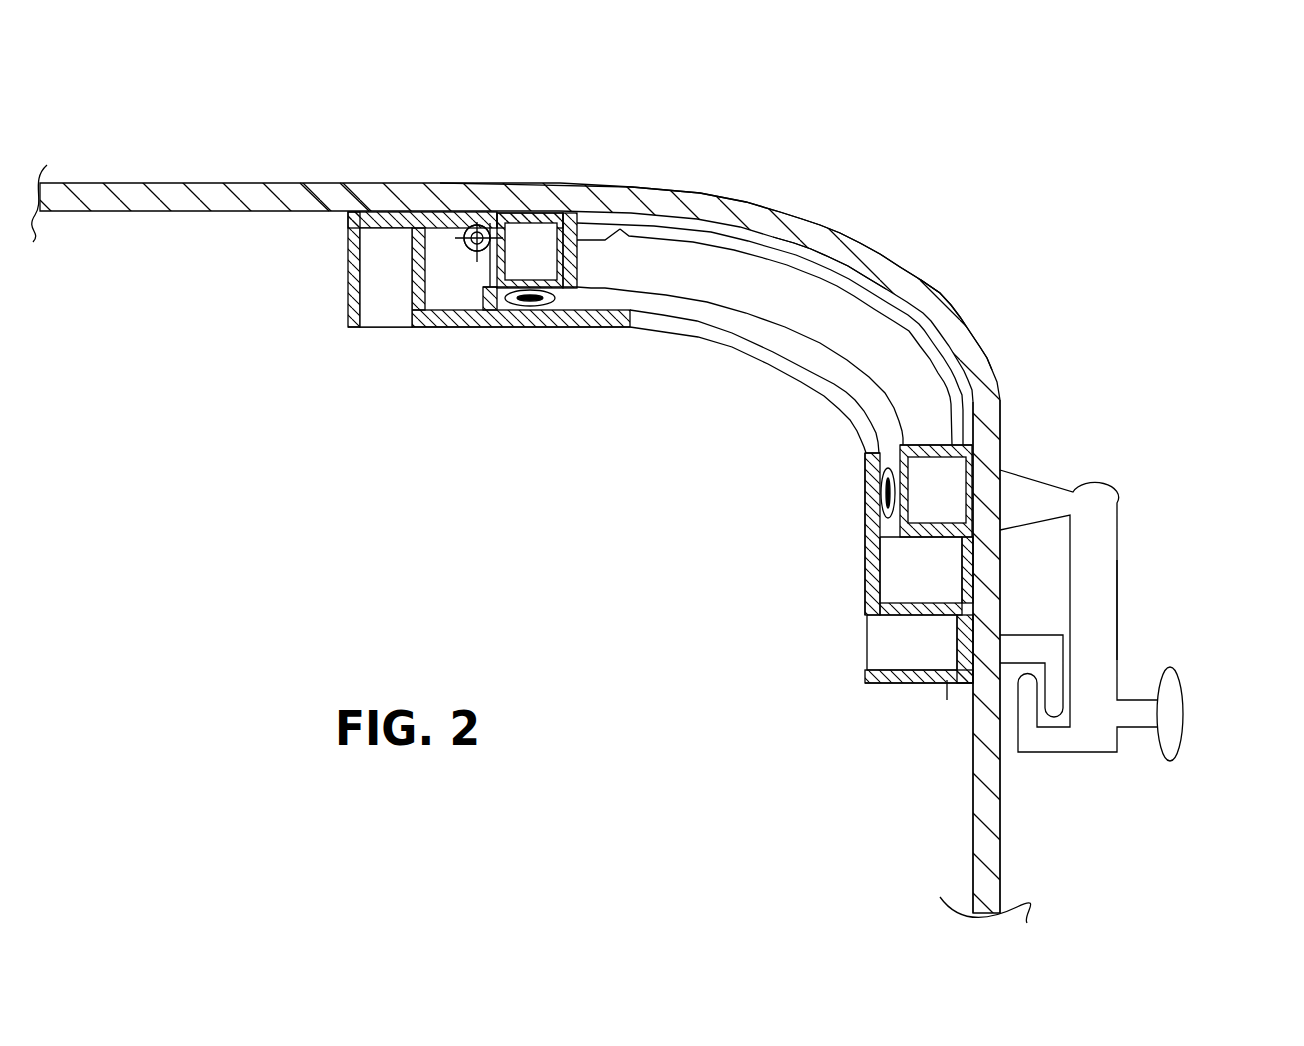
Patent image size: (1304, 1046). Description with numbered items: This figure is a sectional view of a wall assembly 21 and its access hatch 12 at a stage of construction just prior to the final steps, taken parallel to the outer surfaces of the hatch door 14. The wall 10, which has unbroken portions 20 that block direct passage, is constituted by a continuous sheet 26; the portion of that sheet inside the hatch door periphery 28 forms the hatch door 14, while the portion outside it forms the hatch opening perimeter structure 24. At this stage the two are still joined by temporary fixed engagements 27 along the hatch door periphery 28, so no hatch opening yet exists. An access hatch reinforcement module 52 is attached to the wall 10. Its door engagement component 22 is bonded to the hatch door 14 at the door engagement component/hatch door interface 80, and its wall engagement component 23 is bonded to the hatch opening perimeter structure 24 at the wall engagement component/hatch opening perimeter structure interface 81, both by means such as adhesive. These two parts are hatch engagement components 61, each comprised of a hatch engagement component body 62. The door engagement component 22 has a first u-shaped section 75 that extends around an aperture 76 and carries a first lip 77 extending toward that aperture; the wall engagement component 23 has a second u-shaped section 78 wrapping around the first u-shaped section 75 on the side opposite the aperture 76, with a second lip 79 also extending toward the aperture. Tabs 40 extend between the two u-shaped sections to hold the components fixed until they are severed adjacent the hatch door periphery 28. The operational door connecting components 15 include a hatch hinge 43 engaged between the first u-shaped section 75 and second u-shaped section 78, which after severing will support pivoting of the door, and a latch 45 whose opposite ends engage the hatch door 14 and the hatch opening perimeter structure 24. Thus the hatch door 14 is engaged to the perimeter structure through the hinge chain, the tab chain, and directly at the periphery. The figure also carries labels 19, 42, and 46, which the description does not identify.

The wall 10 is at (200, 193).
The access hatch 12 is at (712, 385).
The hatch door 14 is at (750, 215).
The operational door connecting components 15 is at (470, 262).
The side wall of panel 19 is at (995, 400).
The unbroken portions 20 is at (140, 195).
The wall assembly 21 is at (268, 265).
The door engagement component 22 is at (578, 222).
The wall engagement component 23 is at (346, 227).
The hatch opening perimeter structure 24 is at (296, 193).
The continuous sheet 26 is at (815, 228).
The temporary fixed engagements 27 is at (478, 212).
The hatch door periphery 28 is at (458, 230).
The tabs 40 is at (440, 285).
The outer surface 42 is at (840, 243).
The hatch hinge 43 is at (425, 404).
The latch 45 is at (1097, 488).
The bracket leg 46 is at (1117, 627).
The access hatch reinforcement module 52 is at (520, 322).
The hatch engagement components 61 is at (882, 482).
The hatch engagement component body 62 is at (968, 478).
The first u-shaped section 75 is at (618, 226).
The aperture 76 is at (850, 317).
The first lip 77 is at (572, 215).
The second u-shaped section 78 is at (352, 325).
The second lip 79 is at (522, 308).
The door engagement component/hatch door interface 80 is at (505, 212).
The wall engagement component/hatch opening perimeter structure interface 81 is at (355, 195).